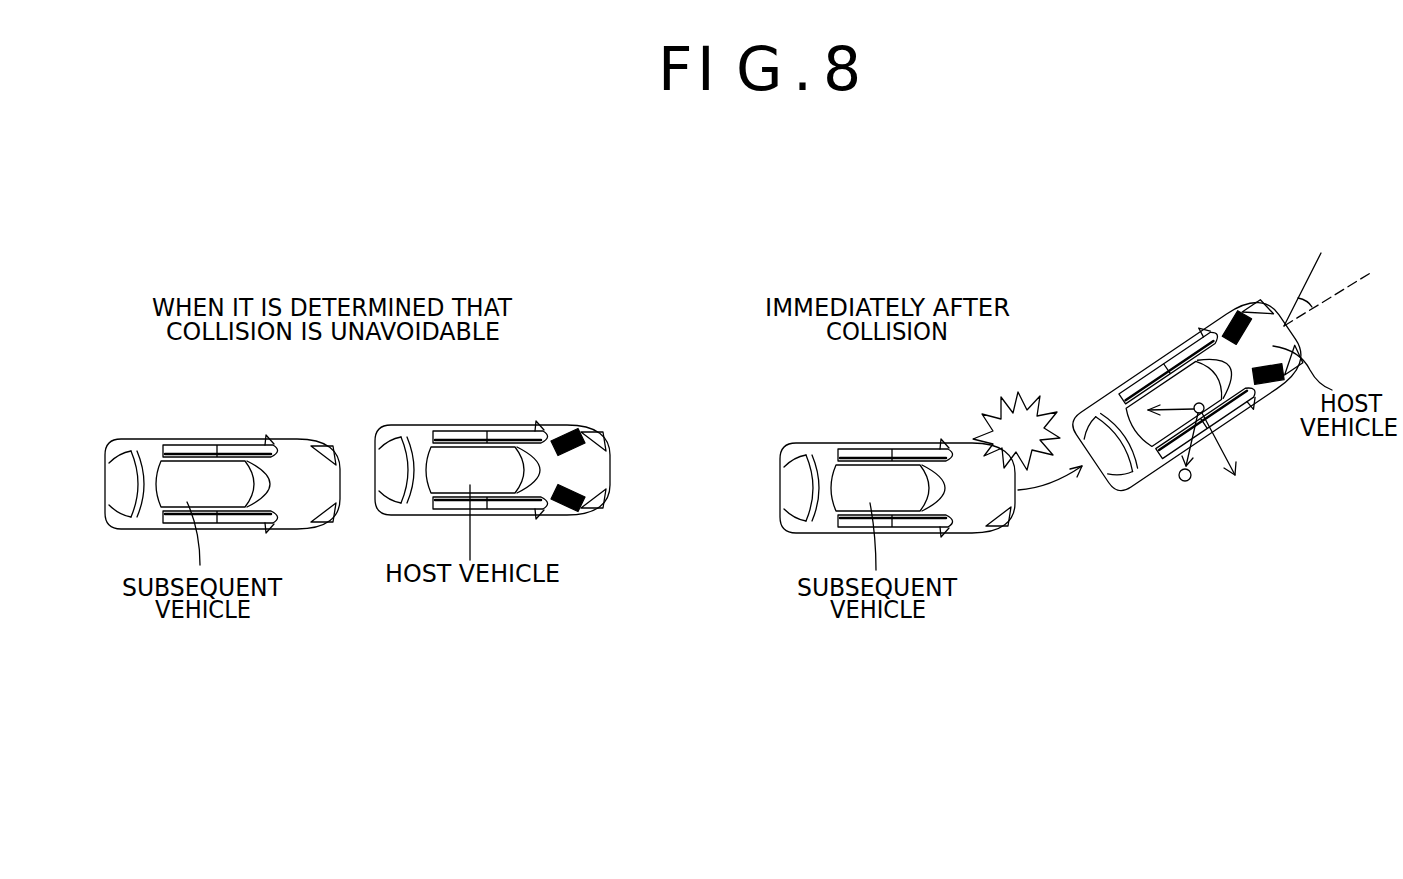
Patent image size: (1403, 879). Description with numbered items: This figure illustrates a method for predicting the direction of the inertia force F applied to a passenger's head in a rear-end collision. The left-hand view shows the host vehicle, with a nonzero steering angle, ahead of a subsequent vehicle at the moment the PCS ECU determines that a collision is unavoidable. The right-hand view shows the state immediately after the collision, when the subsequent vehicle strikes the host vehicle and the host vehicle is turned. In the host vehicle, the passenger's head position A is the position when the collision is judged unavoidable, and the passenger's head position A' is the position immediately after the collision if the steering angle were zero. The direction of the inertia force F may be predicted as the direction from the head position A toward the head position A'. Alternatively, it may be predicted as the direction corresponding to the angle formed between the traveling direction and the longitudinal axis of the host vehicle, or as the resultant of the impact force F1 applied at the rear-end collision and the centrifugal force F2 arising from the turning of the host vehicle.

The passenger's head position A is at (1176, 352).
The passenger's head position A' is at (1189, 532).
The inertia force F is at (1193, 462).
The impact force F1 is at (1136, 381).
The centrifugal force F2 is at (1221, 443).